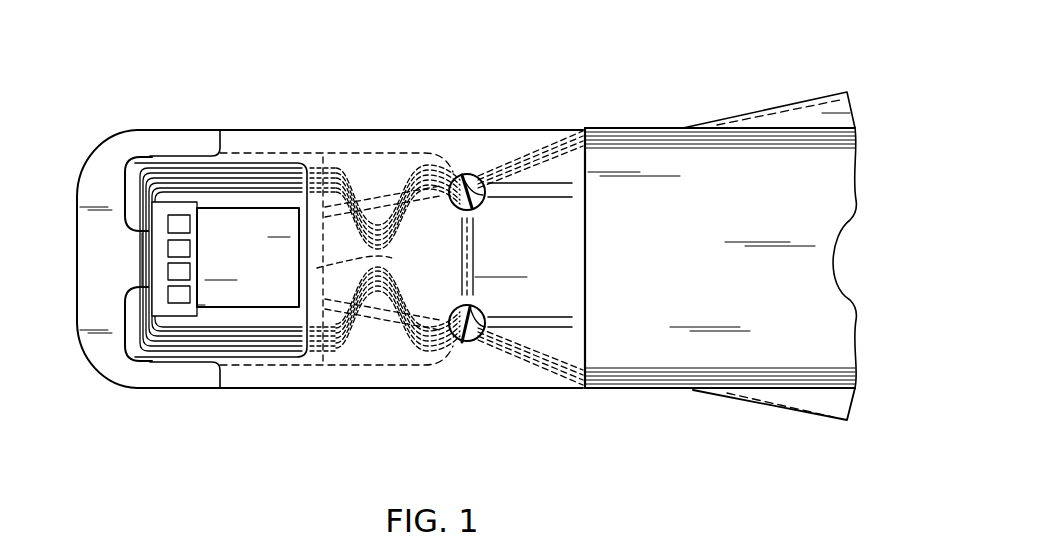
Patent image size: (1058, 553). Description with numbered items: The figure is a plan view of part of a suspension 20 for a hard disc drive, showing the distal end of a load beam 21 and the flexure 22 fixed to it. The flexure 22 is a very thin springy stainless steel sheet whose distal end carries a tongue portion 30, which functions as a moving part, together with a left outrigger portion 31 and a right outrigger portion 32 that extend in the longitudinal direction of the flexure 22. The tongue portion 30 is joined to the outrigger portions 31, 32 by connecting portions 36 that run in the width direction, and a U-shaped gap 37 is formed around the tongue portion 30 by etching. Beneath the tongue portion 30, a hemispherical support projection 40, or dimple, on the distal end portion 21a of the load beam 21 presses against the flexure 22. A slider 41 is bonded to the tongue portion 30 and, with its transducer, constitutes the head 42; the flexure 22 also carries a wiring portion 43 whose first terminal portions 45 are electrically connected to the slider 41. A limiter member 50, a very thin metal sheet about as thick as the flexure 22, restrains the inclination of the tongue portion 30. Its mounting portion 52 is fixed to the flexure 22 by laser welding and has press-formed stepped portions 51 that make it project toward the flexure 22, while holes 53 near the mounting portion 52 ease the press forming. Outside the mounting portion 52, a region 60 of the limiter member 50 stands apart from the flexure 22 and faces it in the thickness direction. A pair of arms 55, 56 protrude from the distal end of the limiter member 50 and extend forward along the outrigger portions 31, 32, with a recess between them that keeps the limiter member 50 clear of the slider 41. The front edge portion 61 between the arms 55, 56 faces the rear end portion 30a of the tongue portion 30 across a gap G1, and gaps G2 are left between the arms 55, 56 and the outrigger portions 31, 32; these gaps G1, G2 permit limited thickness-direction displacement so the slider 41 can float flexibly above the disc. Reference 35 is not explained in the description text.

The suspension 20 is at (640, 105).
The load beam 21 is at (780, 100).
The distal end portion of the load beam 21a is at (343, 165).
The flexure 22 is at (643, 353).
The tongue portion 30 is at (215, 200).
The rear end portion of the tongue portion 30a is at (317, 365).
The outrigger portion 31 is at (197, 145).
The outrigger portion 32 is at (152, 383).
The recess 35 is at (128, 260).
The connecting portions 36 is at (102, 162).
The U-shaped gap 37 is at (141, 150).
The support projection 40 is at (253, 263).
The slider 41 is at (220, 302).
The head 42 is at (211, 302).
The wiring portion 43 is at (527, 363).
The first terminal portions 45 is at (192, 274).
The limiter member 50 is at (497, 133).
The stepped portions 51 is at (475, 240).
The mounting portion 52 is at (568, 262).
The holes 53 is at (463, 173).
The arm 55 is at (243, 140).
The arm 56 is at (248, 383).
The region outside the mounting portion 60 is at (392, 352).
The front edge portion 61 is at (300, 227).
The gap G1 is at (370, 262).
The gaps G2 is at (313, 150).